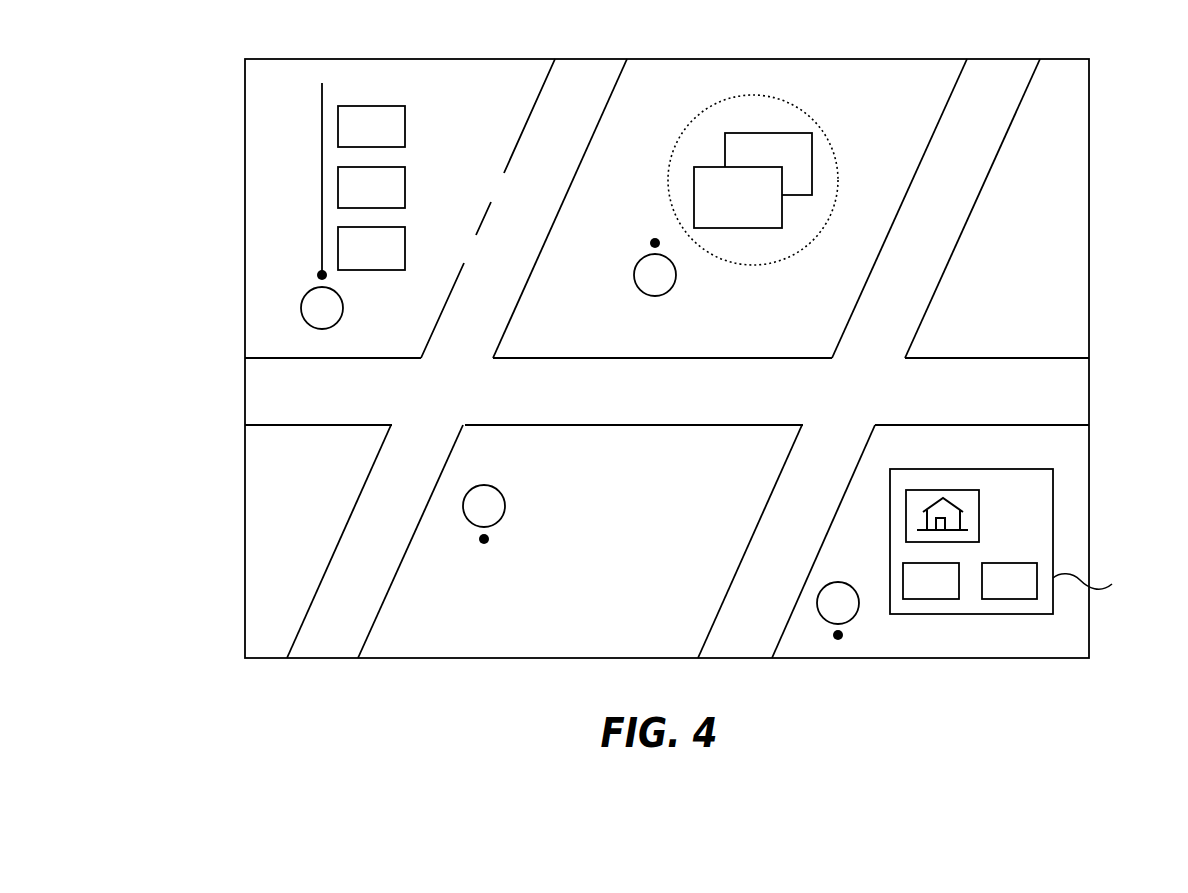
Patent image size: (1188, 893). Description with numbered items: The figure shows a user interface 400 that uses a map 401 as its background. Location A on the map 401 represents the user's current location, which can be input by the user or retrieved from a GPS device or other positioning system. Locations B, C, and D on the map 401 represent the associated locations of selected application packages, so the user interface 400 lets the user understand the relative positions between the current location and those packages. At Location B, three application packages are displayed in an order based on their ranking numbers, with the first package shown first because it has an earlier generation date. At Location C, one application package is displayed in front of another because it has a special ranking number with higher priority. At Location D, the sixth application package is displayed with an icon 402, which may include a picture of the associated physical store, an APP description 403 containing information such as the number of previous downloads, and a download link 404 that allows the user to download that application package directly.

The user interface 400 is at (666, 345).
The map 401 is at (260, 503).
The icon 402 is at (980, 517).
The APP description 403 is at (931, 581).
The download link 404 is at (1009, 581).